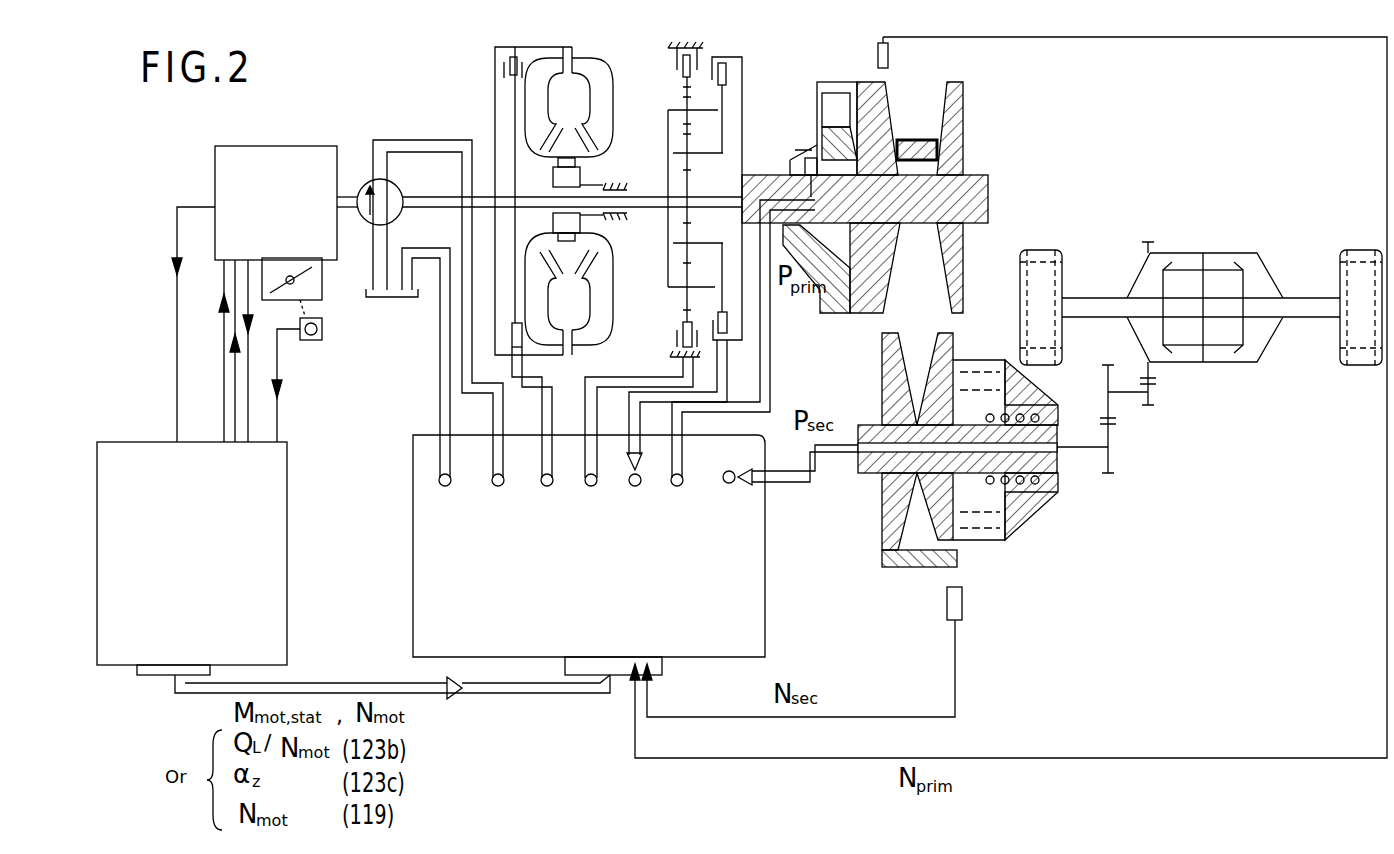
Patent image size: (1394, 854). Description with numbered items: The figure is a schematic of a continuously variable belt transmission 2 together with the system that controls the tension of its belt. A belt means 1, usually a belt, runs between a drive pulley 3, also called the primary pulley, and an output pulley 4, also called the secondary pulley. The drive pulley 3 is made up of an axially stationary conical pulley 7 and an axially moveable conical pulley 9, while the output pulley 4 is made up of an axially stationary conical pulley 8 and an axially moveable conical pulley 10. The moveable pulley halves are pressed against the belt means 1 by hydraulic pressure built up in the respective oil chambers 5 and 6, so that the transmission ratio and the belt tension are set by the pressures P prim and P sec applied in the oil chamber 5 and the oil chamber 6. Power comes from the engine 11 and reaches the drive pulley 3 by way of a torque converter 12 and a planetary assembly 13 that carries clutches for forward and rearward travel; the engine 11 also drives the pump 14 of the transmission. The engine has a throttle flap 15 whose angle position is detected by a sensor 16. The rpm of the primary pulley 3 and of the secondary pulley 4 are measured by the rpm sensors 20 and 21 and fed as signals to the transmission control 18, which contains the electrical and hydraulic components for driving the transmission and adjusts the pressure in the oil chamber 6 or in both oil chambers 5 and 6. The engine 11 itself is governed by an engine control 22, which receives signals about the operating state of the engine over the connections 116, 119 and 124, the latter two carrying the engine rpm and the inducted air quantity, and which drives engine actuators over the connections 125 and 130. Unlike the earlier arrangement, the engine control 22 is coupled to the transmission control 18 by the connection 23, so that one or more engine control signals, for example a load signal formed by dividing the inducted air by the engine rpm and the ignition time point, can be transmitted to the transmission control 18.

The belt means 1 is at (920, 565).
The continuous belt transmission 2 is at (992, 80).
The drive pulley 3 is at (891, 197).
The output pulley 4 is at (949, 469).
The oil chamber 5 is at (837, 145).
The oil chamber 6 is at (1007, 498).
The axially stationary conical pulley 7 is at (992, 213).
The axially stationary conical pulley 8 is at (892, 475).
The axially moveable conical pulley 9 is at (888, 112).
The axially moveable conical pulley 10 is at (948, 353).
The engine 11 is at (306, 150).
The torque converter 12 is at (600, 60).
The planetary assembly 13 is at (745, 66).
The pump 14 is at (400, 194).
The throttle flap 15 is at (322, 285).
The sensor 16 is at (322, 330).
The transmission control 18 is at (752, 613).
The rpm sensor 20 is at (888, 60).
The rpm sensor 21 is at (963, 603).
The engine control 22 is at (280, 605).
The connection 23 is at (497, 693).
The connection 116 is at (277, 372).
The connection 119 is at (177, 279).
The connection 124 is at (248, 308).
The connection 125 is at (224, 290).
The connection 130 is at (235, 357).